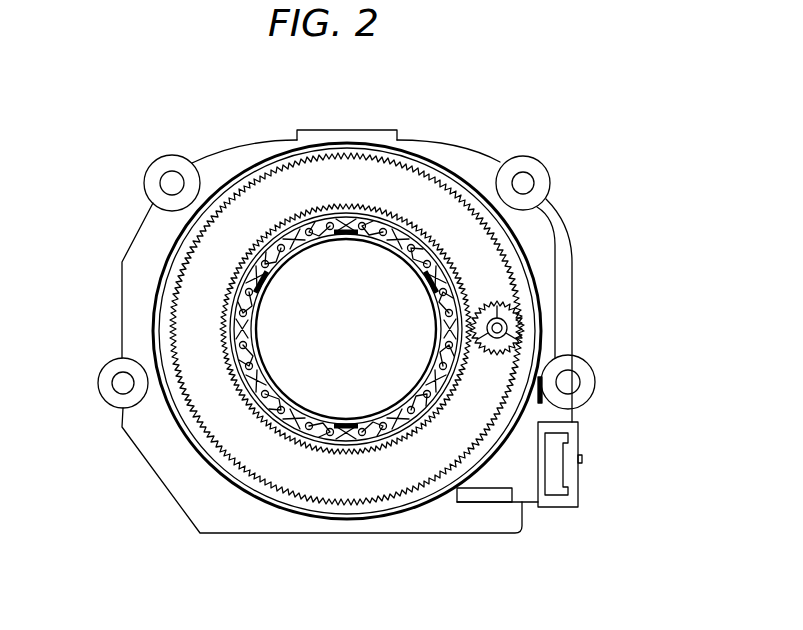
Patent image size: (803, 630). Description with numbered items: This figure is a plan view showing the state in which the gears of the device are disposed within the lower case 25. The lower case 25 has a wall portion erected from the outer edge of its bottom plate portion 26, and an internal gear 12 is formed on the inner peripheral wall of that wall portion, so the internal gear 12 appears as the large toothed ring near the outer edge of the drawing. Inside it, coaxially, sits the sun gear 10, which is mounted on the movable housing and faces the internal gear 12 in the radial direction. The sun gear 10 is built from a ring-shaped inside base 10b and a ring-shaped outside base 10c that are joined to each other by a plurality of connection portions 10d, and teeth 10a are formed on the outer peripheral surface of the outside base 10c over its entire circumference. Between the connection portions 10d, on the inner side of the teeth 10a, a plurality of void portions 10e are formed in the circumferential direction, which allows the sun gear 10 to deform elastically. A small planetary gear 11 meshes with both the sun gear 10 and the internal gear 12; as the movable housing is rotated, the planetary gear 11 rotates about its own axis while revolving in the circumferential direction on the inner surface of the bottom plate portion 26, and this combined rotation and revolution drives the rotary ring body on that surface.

The sun gear 10 is at (393, 209).
The teeth 10a is at (280, 226).
The inside base 10b is at (300, 262).
The outside base 10c is at (357, 200).
The connection portions 10d is at (257, 238).
The void portions 10e is at (243, 253).
The planetary gear 11 is at (513, 357).
The internal gear 12 is at (503, 256).
The lower case 25 is at (500, 154).
The bottom plate portion 26 is at (403, 480).